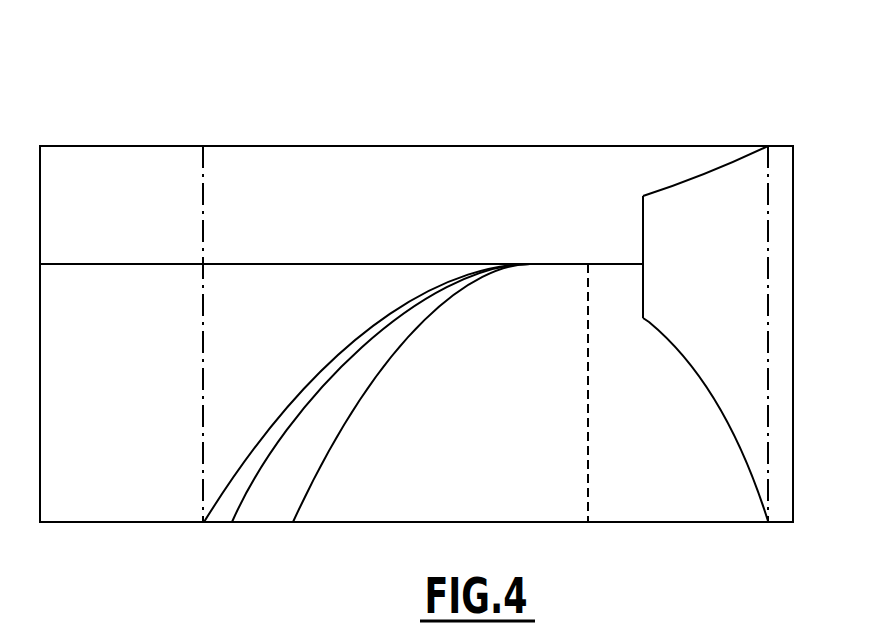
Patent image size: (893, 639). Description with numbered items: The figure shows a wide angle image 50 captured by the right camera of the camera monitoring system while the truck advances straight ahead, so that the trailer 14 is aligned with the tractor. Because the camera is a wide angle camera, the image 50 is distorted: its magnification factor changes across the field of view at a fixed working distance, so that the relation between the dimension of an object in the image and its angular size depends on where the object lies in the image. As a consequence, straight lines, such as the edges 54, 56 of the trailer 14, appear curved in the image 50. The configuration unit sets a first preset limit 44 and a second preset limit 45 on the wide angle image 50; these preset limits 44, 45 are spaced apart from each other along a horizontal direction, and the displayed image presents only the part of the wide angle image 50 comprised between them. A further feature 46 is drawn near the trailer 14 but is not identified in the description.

The wide angle image 50 is at (576, 100).
The second preset limit 45 is at (203, 321).
The first preset limit 44 is at (768, 318).
The trailer 14 is at (666, 307).
The leading edge 46 is at (643, 230).
The edge of the trailer 56 is at (688, 178).
The edge of the trailer 54 is at (706, 384).